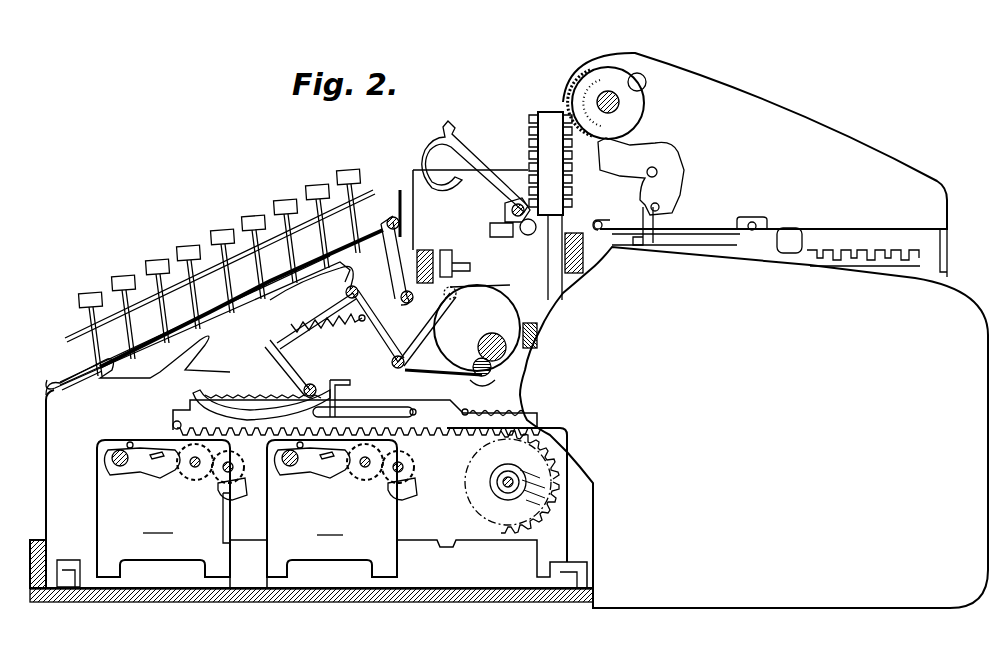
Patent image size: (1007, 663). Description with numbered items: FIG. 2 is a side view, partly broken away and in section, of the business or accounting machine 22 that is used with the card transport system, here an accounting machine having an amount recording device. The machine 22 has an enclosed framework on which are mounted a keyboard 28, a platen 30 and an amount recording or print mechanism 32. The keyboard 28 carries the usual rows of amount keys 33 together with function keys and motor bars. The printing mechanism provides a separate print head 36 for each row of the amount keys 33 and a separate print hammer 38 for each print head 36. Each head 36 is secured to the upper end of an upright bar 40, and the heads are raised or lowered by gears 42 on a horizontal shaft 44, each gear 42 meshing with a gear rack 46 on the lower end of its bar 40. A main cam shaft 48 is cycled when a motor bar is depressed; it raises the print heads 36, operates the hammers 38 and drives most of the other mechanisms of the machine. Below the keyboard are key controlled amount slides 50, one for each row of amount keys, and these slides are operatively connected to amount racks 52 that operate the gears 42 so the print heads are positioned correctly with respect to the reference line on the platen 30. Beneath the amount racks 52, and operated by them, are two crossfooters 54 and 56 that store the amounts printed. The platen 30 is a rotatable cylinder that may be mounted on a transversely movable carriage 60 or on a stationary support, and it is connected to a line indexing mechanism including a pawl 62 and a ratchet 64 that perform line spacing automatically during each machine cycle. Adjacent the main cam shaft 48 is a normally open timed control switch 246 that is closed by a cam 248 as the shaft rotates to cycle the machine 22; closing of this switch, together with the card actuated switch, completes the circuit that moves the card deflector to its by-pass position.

The machine 22 is at (724, 610).
The keyboard 28 is at (232, 222).
The platen 30 is at (598, 72).
The amount recording or print mechanism 32 is at (523, 114).
The amount keys 33 is at (340, 173).
The print head 36 is at (550, 118).
The print hammer 38 is at (450, 140).
The upright bar 40 is at (553, 297).
The gear 42 is at (542, 480).
The horizontal shaft 44 is at (500, 486).
The gear rack 46 is at (560, 500).
The main cam shaft 48 is at (503, 357).
The amount slide 50 is at (205, 350).
The amount rack 52 is at (446, 440).
The crossfooter 54 is at (172, 508).
The crossfooter 56 is at (342, 508).
The carriage 60 is at (768, 107).
The pawl 62 is at (627, 168).
The ratchet 64 is at (588, 87).
The timed control switch 246 is at (530, 338).
The cam 248 is at (507, 370).